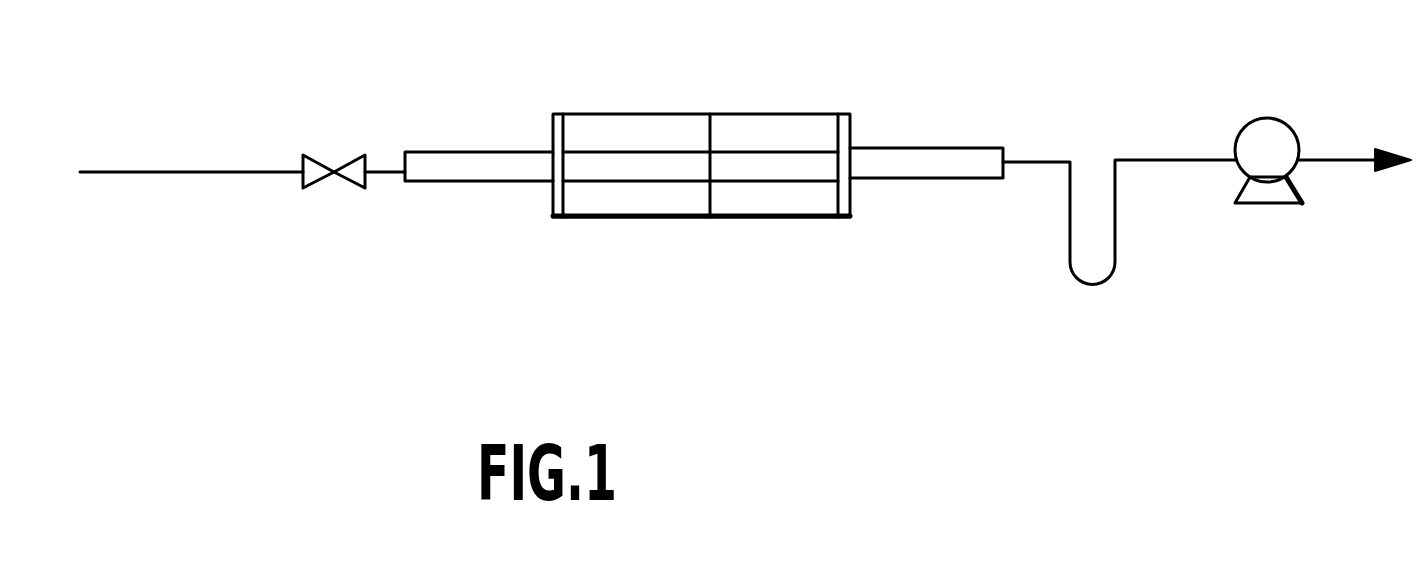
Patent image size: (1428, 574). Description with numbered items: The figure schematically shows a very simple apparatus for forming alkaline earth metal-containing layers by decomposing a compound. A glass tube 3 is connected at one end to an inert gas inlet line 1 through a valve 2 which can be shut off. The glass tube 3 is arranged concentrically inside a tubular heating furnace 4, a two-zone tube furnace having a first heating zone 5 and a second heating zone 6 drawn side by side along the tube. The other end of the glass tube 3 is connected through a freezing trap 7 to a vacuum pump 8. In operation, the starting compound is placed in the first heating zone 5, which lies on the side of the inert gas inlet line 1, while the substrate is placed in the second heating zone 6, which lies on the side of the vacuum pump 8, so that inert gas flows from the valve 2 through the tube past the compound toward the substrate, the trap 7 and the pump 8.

The inert gas inlet line 1 is at (178, 174).
The valve 2 is at (329, 166).
The glass tube 3 is at (478, 184).
The tubular heating furnace 4 is at (557, 116).
The first heating zone 5 is at (653, 203).
The second heating zone 6 is at (792, 198).
The freezing trap 7 is at (1068, 266).
The vacuum pump 8 is at (1282, 118).